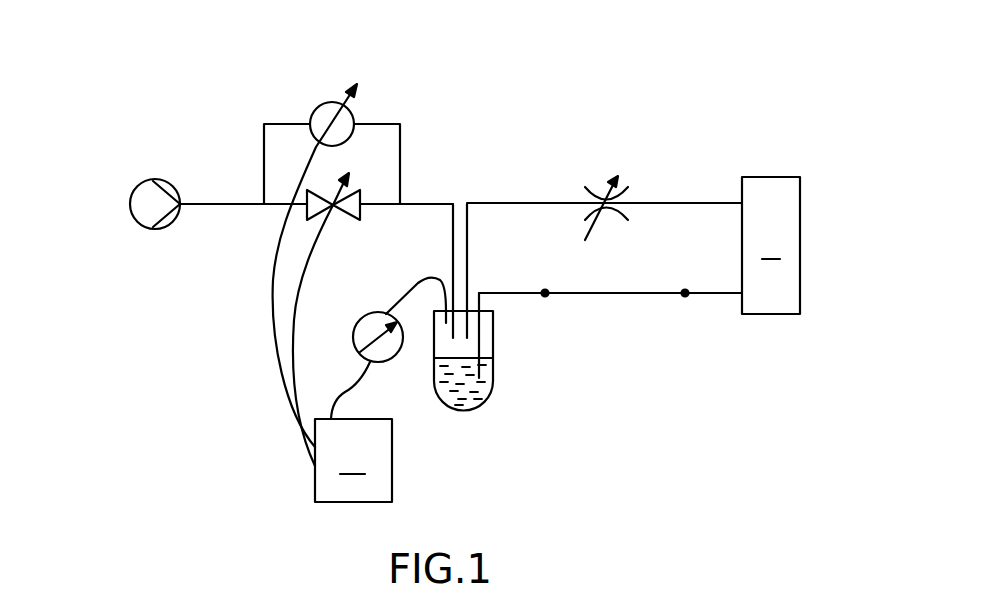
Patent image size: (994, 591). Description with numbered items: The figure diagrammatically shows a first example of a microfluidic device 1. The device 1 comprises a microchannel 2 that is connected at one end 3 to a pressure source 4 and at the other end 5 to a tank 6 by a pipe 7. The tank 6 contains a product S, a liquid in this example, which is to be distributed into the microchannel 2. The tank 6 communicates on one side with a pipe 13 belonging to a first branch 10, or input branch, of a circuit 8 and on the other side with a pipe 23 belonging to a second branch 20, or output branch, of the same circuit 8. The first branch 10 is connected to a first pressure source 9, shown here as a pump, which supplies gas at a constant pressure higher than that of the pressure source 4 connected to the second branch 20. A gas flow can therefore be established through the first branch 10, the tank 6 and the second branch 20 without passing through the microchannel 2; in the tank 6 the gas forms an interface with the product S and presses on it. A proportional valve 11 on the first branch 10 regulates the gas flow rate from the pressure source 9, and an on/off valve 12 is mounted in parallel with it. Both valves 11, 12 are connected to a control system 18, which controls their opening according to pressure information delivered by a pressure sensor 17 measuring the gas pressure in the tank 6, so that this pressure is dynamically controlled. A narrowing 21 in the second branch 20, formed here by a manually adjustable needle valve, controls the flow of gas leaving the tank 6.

The microfluidic device 1 is at (182, 435).
The microchannel 2 is at (623, 297).
The end 3 is at (685, 297).
The pressure source 4 is at (771, 245).
The other end 5 is at (545, 297).
The tank 6 is at (470, 412).
The pipe 7 is at (511, 297).
The circuit 8 is at (417, 103).
The first pressure source 9 is at (131, 222).
The first branch 10 is at (423, 189).
The proportional valve 11 is at (357, 192).
The on/off valve 12 is at (344, 106).
The pipe 13 is at (452, 244).
The pressure sensor 17 is at (359, 320).
The control system 18 is at (332, 293).
The second branch 20 is at (505, 184).
The narrowing 21 is at (594, 184).
The pipe 23 is at (468, 256).
The product S is at (447, 397).